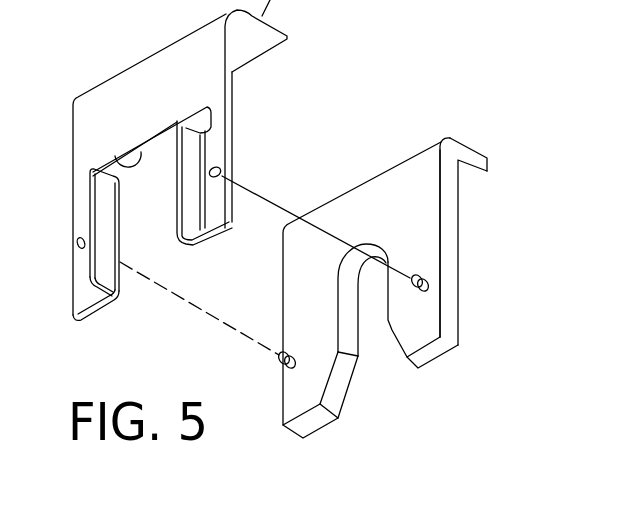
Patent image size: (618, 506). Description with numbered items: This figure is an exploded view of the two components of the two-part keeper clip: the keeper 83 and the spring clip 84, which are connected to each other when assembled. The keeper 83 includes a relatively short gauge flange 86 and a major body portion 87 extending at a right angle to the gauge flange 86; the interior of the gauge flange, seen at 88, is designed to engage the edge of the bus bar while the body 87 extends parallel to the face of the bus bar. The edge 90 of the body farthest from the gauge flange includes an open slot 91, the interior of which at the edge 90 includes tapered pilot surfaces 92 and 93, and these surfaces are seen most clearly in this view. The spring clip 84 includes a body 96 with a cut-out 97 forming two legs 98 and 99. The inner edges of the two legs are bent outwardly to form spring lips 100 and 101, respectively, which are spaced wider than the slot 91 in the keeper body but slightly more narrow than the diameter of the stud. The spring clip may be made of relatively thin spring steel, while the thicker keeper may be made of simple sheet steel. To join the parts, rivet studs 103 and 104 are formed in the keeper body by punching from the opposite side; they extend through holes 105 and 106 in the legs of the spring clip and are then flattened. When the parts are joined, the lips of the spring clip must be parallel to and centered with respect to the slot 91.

The keeper 83 is at (458, 260).
The spring clip 84 is at (234, 108).
The gauge flange 86 is at (476, 153).
The major body portion 87 is at (450, 228).
The interior of the gauge flange 88 is at (468, 176).
The edge of the body 90 is at (316, 428).
The open slot 91 is at (338, 300).
The tapered pilot surface 92 is at (352, 395).
The tapered pilot surface 93 is at (395, 345).
The body 96 is at (108, 118).
The cut-out 97 is at (116, 157).
The leg 98 is at (86, 212).
The leg 99 is at (215, 152).
The spring lip 100 is at (90, 268).
The spring lip 101 is at (176, 180).
The rivet stud 103 is at (278, 360).
The rivet stud 104 is at (423, 292).
The hole 105 is at (77, 245).
The hole 106 is at (221, 173).